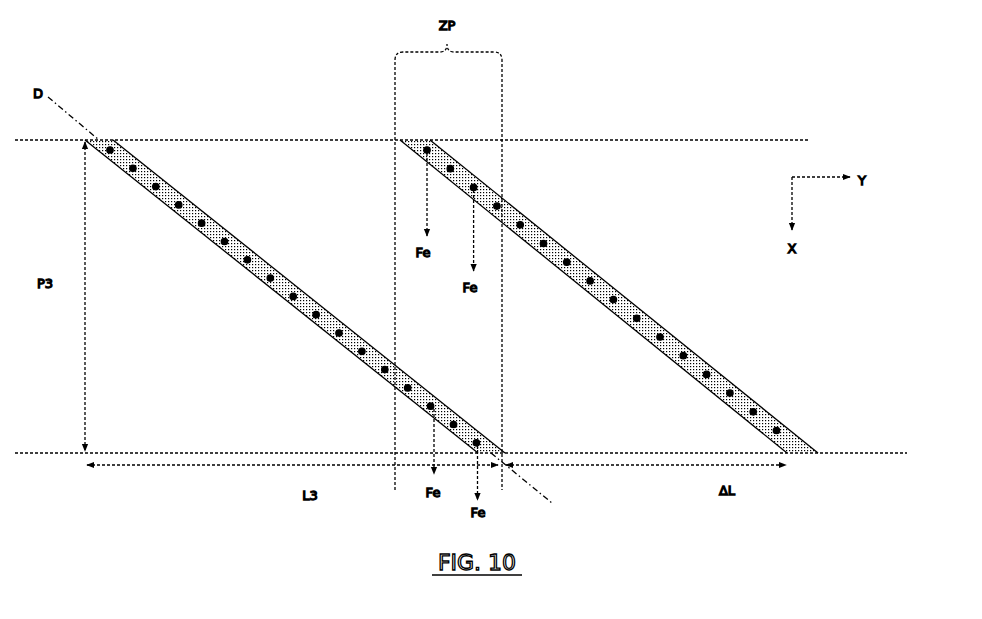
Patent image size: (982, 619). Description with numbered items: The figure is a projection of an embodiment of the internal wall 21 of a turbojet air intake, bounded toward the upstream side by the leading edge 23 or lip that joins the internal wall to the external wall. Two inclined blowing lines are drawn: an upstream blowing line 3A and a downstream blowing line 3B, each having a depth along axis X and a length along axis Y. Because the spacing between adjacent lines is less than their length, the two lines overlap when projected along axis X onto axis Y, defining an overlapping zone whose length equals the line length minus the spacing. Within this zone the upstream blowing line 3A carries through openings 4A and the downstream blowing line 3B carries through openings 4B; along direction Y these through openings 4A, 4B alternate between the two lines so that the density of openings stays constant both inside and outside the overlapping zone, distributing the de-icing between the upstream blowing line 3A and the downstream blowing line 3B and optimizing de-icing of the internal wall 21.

The internal wall 21 is at (158, 363).
The leading edge 23 is at (350, 139).
The upstream blowing line 3A is at (621, 328).
The downstream blowing line 3B is at (164, 222).
The through openings of the upstream blowing line 4A is at (428, 141).
The through openings of the downstream blowing line 4B is at (230, 233).